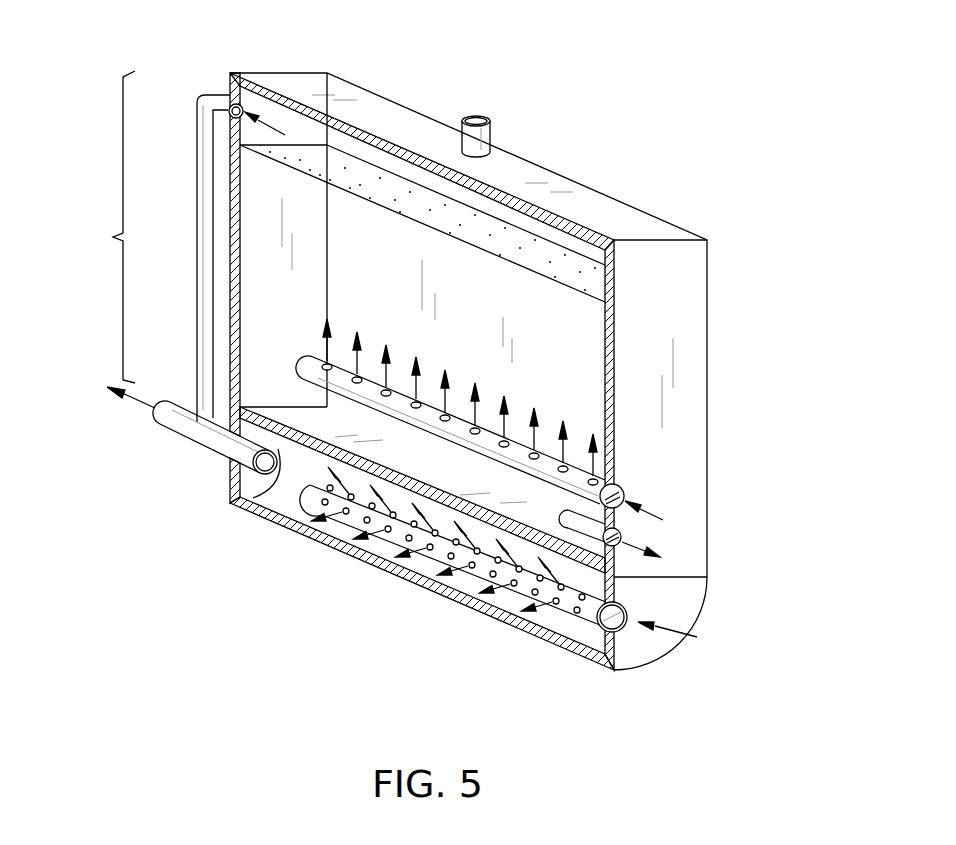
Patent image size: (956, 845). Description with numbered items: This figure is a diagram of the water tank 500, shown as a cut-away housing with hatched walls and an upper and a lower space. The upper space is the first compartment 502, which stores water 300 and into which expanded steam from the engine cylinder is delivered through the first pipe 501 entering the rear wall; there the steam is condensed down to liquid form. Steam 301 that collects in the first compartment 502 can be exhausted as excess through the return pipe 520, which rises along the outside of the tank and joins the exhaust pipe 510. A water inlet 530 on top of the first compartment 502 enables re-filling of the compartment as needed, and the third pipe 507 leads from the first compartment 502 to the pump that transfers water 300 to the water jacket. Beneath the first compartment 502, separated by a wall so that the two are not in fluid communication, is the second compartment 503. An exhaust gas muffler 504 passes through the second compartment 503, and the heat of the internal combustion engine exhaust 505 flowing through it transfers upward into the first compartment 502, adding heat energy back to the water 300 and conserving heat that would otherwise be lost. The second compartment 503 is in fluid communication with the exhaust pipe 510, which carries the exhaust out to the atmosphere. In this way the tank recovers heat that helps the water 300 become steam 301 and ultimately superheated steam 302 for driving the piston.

The water 300 is at (553, 313).
The steam 301 is at (271, 127).
The superheated steam 302 is at (448, 397).
The water tank 500 is at (708, 368).
The first pipe 501 is at (622, 492).
The first compartment 502 is at (96, 227).
The second compartment 503 is at (255, 480).
The exhaust gas muffler 504 is at (589, 628).
The internal combustion engine exhaust 505 is at (542, 627).
The third pipe 507 is at (622, 528).
The exhaust pipe 510 is at (175, 418).
The return pipe 520 is at (202, 190).
The water inlet 530 is at (462, 123).